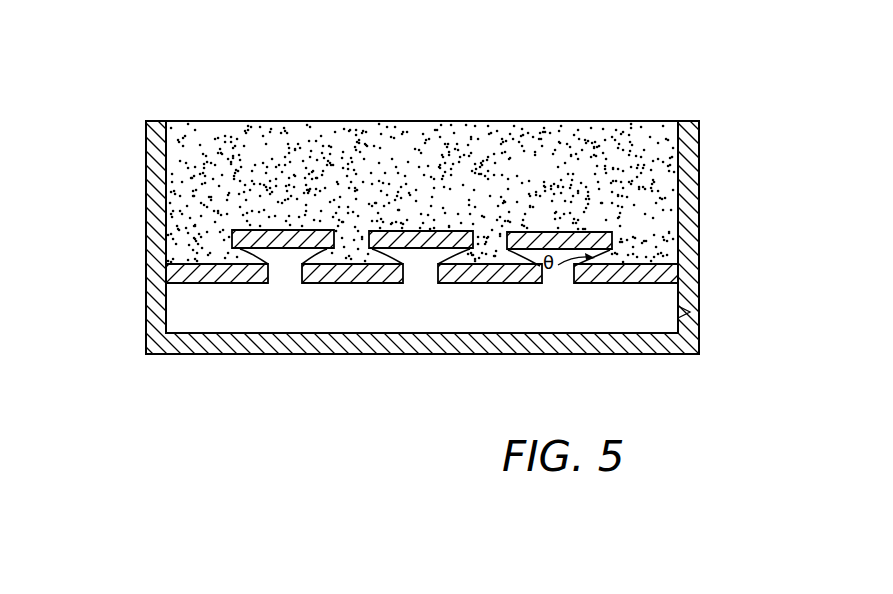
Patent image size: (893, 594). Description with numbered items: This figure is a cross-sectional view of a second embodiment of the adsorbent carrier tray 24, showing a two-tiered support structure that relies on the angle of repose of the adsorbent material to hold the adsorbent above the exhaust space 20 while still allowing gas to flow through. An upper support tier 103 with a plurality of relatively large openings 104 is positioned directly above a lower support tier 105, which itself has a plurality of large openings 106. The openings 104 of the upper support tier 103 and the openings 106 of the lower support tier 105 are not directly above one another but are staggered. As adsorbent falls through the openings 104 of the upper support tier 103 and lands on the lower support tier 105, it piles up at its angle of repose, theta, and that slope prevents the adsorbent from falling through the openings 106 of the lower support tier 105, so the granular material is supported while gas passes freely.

The package housing 24 is at (136, 135).
The openings of the upper support tier 104 is at (353, 237).
The upper support tier 103 is at (624, 241).
The lower support tier 105 is at (690, 272).
The openings of the lower support tier 106 is at (287, 280).
The substrate cavity 20 is at (226, 318).